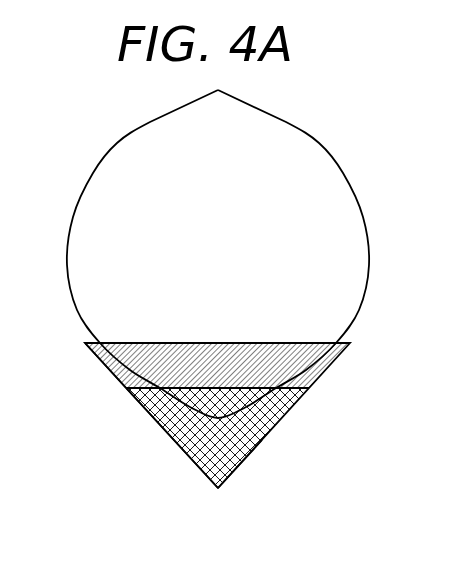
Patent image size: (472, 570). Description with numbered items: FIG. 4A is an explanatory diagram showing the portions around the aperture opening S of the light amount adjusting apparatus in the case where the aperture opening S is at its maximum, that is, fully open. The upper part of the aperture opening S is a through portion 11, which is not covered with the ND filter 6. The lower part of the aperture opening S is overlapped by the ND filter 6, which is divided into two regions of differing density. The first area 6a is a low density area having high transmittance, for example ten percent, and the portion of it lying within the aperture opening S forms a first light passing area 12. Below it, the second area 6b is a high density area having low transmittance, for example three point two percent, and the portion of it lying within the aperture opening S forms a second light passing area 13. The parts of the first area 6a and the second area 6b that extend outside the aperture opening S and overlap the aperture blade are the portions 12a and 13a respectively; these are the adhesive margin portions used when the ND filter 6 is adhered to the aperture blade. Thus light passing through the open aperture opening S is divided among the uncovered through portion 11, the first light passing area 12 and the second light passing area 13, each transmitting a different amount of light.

The aperture opening S is at (227, 254).
The through portion 11 is at (314, 157).
The first light passing area 12 is at (297, 342).
The second light passing area 13 is at (267, 421).
The adhesive margin portion of first area 12a is at (112, 373).
The adhesive margin portion of second area 13a is at (180, 446).
The ND filter 6 is at (249, 429).
The first area 6a is at (282, 384).
The second area 6b is at (236, 467).